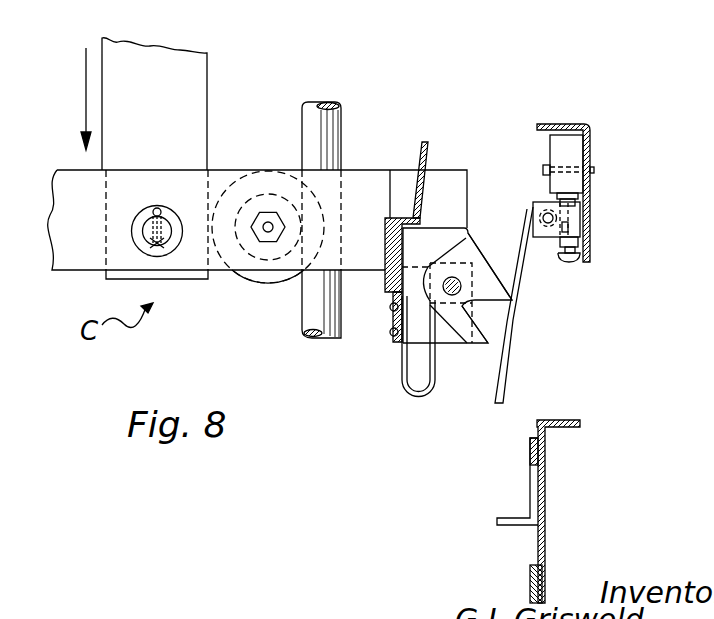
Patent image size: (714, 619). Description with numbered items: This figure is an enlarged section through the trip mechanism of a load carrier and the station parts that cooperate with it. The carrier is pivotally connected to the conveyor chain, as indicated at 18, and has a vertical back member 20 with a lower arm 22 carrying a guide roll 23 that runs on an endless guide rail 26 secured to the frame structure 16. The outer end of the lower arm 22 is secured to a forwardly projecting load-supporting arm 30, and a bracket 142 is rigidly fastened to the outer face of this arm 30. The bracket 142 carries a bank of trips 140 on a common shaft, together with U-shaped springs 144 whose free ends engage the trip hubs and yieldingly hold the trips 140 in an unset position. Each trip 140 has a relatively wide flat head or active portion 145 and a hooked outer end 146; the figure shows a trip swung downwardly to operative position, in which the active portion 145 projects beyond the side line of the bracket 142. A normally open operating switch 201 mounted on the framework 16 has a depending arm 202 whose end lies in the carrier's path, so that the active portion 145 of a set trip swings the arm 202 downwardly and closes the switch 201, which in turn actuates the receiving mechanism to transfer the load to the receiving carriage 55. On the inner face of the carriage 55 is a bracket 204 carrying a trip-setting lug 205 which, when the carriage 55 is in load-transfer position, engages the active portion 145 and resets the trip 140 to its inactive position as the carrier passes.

The vertical back member 20 is at (197, 95).
The lower arm 22 is at (357, 182).
The guide rail 26 is at (308, 127).
The pivotal connection 18 is at (165, 218).
The guide roll 23 is at (258, 277).
The load-supporting arm 30 is at (383, 295).
The trip 140 is at (430, 303).
The bracket 142 is at (447, 345).
The U-shaped spring 144 is at (412, 392).
The active portion 145 is at (487, 263).
The hooked outer end 146 is at (477, 347).
The depending arm 202 is at (514, 323).
The frame structure 16 is at (590, 210).
The operating switch 201 is at (573, 153).
The bracket 204 is at (545, 522).
The trip-setting lug 205 is at (510, 517).
The receiving carriage 55 is at (530, 578).